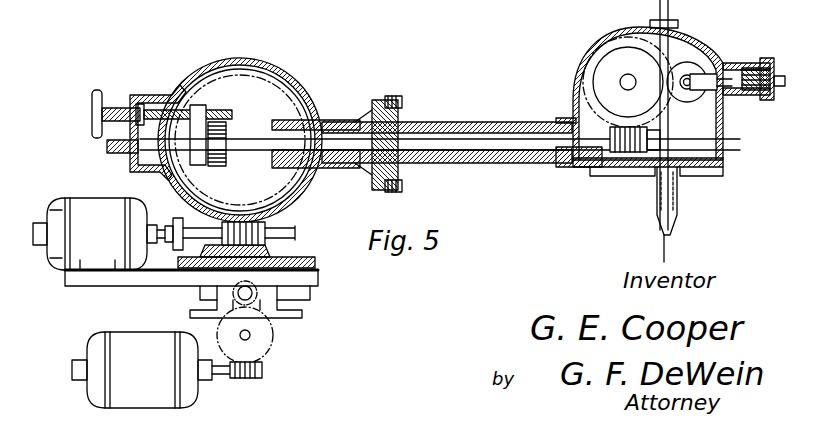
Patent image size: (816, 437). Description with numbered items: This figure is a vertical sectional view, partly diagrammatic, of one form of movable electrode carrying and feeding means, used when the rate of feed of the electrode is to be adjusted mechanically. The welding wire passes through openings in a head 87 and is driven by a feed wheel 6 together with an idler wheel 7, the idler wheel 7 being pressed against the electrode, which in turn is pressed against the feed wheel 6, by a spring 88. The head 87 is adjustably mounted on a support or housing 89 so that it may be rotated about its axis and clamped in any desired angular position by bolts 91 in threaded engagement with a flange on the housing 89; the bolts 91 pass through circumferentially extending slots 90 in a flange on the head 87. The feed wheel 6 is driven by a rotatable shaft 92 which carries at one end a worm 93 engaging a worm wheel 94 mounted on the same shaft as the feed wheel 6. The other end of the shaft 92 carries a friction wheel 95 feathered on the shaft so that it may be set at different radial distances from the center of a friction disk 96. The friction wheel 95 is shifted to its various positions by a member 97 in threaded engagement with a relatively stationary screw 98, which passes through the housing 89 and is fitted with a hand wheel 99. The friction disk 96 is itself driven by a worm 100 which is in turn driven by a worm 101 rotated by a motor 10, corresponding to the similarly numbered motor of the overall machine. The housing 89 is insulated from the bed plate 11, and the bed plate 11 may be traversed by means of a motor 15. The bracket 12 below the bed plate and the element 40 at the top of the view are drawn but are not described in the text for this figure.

The feed wheel 6 is at (573, 72).
The idler wheel 7 is at (685, 97).
The motor 10 is at (107, 197).
The bed plate 11 is at (312, 287).
The bracket 12 is at (238, 295).
The motor 15 is at (148, 337).
The needle rod 40 is at (404, 0).
The head 87 is at (491, 122).
The spring 88 is at (739, 63).
The housing 89 is at (308, 95).
The circumferentially extending slots 90 is at (388, 100).
The bolts 91 is at (403, 110).
The rotatable shaft 92 is at (536, 133).
The worm 93 is at (628, 153).
The worm wheel 94 is at (617, 45).
The friction wheel 95 is at (226, 140).
The friction disk 96 is at (280, 74).
The member 97 is at (200, 110).
The screw 98 is at (225, 110).
The hand wheel 99 is at (102, 96).
The worm 100 is at (321, 109).
The worm 101 is at (290, 257).